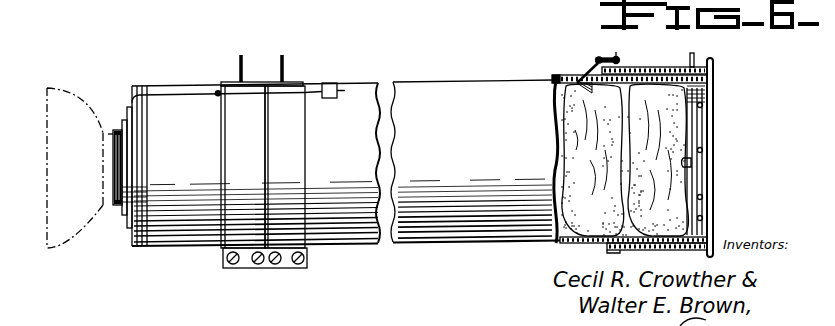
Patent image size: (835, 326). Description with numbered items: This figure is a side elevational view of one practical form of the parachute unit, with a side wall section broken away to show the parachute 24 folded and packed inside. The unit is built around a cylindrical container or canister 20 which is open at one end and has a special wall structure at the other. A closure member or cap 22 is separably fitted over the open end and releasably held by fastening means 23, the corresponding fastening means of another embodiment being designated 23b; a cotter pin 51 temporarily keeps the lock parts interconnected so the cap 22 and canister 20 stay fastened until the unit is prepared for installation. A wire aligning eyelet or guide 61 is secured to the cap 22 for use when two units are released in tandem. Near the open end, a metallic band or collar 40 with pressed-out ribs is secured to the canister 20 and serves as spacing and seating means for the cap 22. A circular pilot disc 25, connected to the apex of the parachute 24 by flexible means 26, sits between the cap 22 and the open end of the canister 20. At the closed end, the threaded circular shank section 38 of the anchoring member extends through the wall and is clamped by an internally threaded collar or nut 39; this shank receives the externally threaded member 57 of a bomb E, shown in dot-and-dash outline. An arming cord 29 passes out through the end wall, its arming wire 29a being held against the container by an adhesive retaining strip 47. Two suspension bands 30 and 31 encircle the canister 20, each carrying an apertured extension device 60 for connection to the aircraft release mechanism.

The cylindrical container or canister 20 is at (440, 247).
The closure member, lid, or cap 22 is at (713, 90).
The fastening means 23 is at (602, 58).
The fastening means 23b is at (446, 8).
The parachute 24 is at (552, 107).
The parachute pilot element or disc 25 is at (700, 125).
The flexible means 26 is at (690, 162).
The fuse pull-out or arming cord 29 is at (172, 96).
The fuse release or arming wire 29a is at (314, 82).
The suspension band or strap 30 is at (282, 272).
The suspension band or strap 31 is at (242, 272).
The threaded circular shank section 38 is at (115, 205).
The internally threaded collar or nut 39 is at (126, 222).
The metallic band or collar 40 is at (580, 245).
The adhesive retaining strip 47 is at (335, 84).
The cotter pin 51 is at (622, 58).
The externally threaded member of the bomb 57 is at (108, 134).
The apertured extension device 60 is at (281, 59).
The wire aligning eyelet or guide 61 is at (694, 56).
The bomb E is at (63, 252).